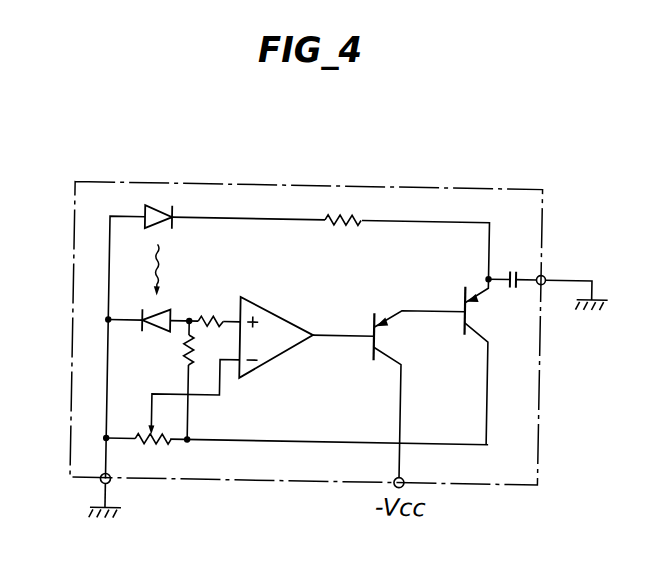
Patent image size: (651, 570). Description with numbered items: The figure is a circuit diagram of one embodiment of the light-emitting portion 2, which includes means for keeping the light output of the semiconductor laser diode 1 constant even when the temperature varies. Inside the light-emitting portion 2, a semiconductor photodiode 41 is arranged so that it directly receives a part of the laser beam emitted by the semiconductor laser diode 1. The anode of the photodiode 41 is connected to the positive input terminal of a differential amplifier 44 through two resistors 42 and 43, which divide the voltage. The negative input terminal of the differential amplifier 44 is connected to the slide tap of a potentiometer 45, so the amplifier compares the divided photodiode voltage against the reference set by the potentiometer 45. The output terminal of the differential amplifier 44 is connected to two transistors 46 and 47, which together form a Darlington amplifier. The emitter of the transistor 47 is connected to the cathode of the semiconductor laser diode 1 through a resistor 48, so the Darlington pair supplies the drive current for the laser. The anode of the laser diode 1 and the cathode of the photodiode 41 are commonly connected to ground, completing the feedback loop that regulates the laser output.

The semiconductor laser diode 1 is at (153, 208).
The light-emitting portion 2 is at (515, 163).
The semiconductor photodiode 41 is at (140, 308).
The resistor 42 is at (212, 320).
The resistor 43 is at (186, 352).
The differential amplifier 44 is at (278, 325).
The potentiometer 45 is at (157, 446).
The transistor 46 is at (388, 330).
The transistor 47 is at (477, 313).
The resistor 48 is at (340, 217).